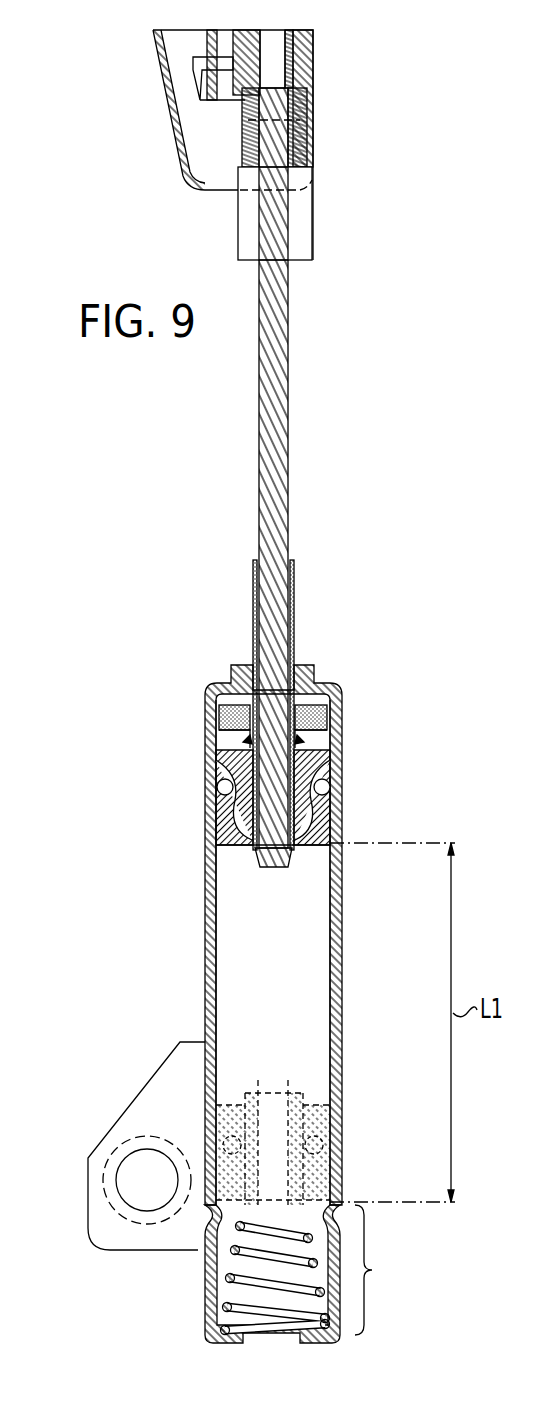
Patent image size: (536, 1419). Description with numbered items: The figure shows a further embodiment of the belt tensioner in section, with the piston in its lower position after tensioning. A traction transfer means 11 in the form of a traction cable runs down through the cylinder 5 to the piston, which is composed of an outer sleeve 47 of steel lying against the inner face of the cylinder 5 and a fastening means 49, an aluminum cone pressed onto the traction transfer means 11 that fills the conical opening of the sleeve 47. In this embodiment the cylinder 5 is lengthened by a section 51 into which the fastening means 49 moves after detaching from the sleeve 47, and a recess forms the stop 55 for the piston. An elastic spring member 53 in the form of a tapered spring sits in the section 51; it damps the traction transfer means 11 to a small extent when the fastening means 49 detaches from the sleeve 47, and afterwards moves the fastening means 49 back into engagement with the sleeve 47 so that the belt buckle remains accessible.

The traction transfer means 11 is at (276, 463).
The cylinder 5 is at (333, 943).
The outer sleeve 47 is at (232, 806).
The fastening means 49 is at (245, 836).
The section 51 is at (382, 1270).
The elastic spring member 53 is at (228, 1280).
The stop 55 is at (205, 1248).